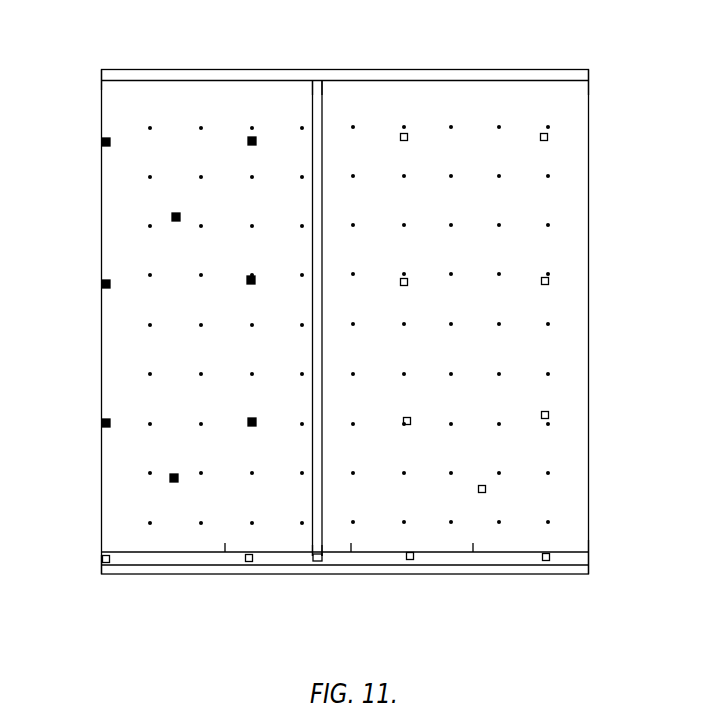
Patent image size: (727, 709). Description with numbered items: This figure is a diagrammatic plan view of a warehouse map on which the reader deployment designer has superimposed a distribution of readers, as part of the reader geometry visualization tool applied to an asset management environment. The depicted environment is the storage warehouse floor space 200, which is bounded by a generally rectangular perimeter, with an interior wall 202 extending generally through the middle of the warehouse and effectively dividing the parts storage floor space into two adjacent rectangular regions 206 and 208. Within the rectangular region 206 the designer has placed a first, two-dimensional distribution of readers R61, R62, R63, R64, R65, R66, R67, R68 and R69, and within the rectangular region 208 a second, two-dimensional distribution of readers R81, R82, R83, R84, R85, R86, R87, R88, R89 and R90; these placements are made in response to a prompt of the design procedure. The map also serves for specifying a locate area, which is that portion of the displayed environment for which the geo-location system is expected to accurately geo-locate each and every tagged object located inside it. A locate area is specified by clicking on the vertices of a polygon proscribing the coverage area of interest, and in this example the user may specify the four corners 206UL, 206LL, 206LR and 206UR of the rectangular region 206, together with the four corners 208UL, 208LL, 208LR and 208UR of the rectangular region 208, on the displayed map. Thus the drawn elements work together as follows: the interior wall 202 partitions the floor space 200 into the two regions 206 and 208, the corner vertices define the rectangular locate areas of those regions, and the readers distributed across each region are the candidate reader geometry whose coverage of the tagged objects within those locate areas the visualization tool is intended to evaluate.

The storage warehouse floor space 200 is at (594, 237).
The interior wall 202 is at (322, 203).
The rectangular region 206 is at (577, 354).
The rectangular region 208 is at (108, 348).
The upper-left vertex of rectangular region 206 206UL is at (322, 81).
The upper-right vertex of rectangular region 206 206UR is at (589, 80).
The lower-left vertex of rectangular region 206 206LL is at (318, 566).
The lower-right vertex of rectangular region 206 206LR is at (590, 552).
The upper-left vertex of rectangular region 208 208UL is at (101, 84).
The upper-right vertex of rectangular region 208 208UR is at (313, 81).
The lower-left vertex of rectangular region 208 208LL is at (100, 575).
The lower-right vertex of rectangular region 208 208LR is at (316, 574).
The reader R61 is at (424, 151).
The reader R62 is at (408, 281).
The reader R63 is at (403, 421).
The reader R64 is at (411, 560).
The reader R65 is at (546, 561).
The reader R66 is at (482, 493).
The reader R67 is at (549, 415).
The reader R68 is at (549, 281).
The reader R69 is at (562, 151).
The reader R81 is at (103, 142).
The reader R82 is at (103, 284).
The reader R83 is at (103, 424).
The reader R84 is at (104, 562).
The reader R85 is at (250, 562).
The reader R86 is at (174, 482).
The reader R87 is at (249, 421).
The reader R88 is at (251, 277).
The reader R89 is at (256, 139).
The reader R90 is at (177, 213).